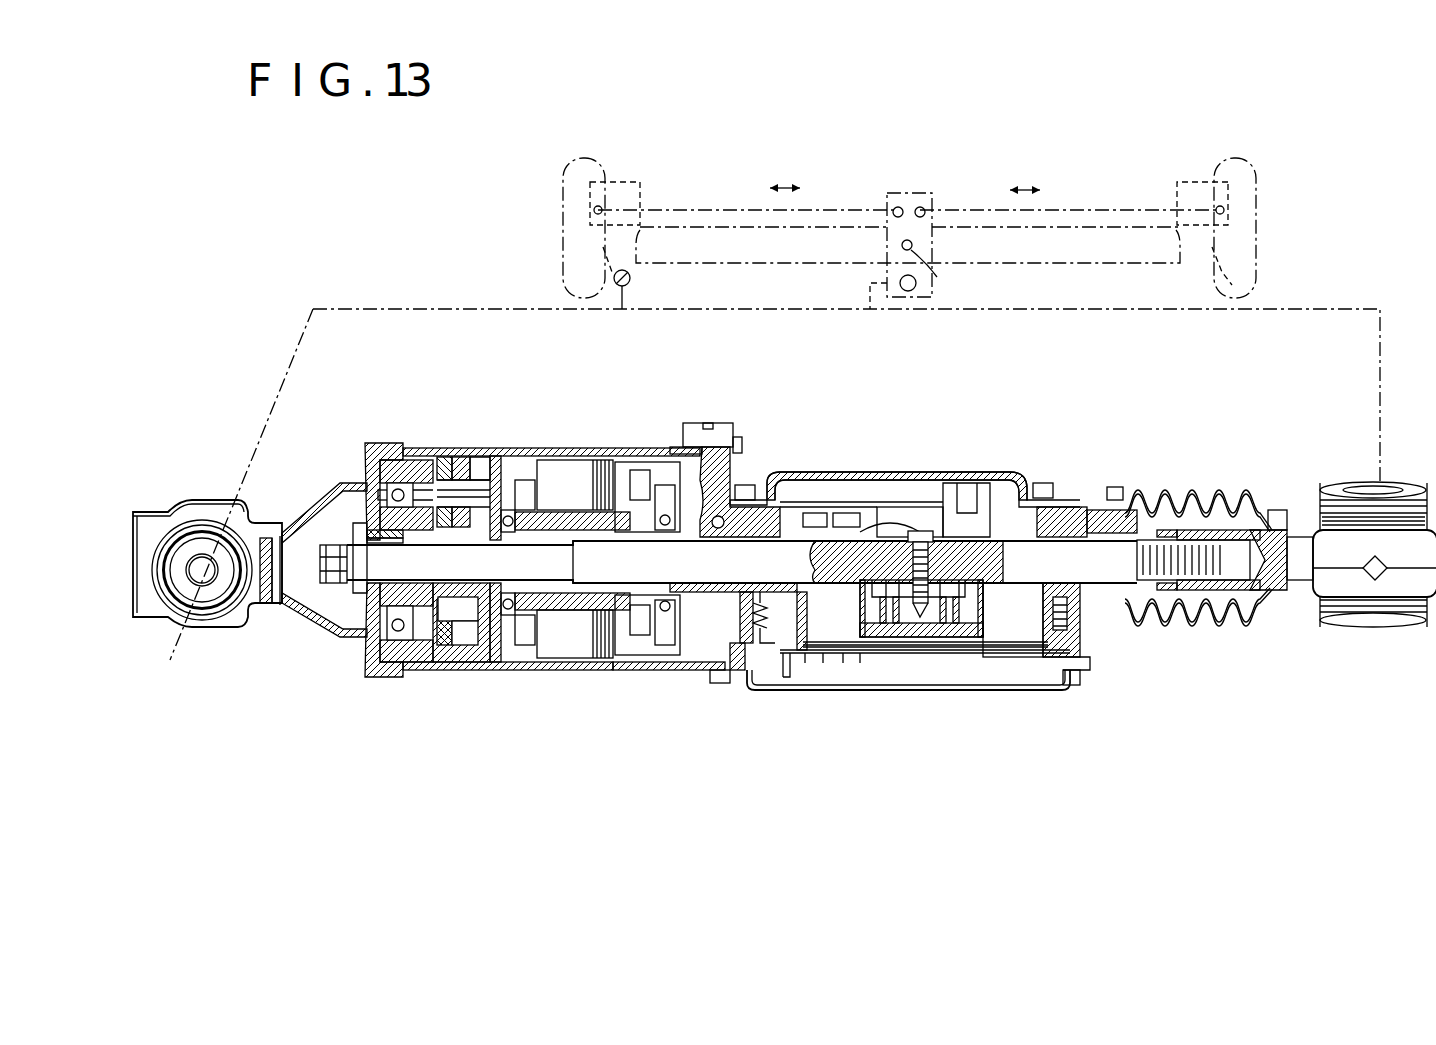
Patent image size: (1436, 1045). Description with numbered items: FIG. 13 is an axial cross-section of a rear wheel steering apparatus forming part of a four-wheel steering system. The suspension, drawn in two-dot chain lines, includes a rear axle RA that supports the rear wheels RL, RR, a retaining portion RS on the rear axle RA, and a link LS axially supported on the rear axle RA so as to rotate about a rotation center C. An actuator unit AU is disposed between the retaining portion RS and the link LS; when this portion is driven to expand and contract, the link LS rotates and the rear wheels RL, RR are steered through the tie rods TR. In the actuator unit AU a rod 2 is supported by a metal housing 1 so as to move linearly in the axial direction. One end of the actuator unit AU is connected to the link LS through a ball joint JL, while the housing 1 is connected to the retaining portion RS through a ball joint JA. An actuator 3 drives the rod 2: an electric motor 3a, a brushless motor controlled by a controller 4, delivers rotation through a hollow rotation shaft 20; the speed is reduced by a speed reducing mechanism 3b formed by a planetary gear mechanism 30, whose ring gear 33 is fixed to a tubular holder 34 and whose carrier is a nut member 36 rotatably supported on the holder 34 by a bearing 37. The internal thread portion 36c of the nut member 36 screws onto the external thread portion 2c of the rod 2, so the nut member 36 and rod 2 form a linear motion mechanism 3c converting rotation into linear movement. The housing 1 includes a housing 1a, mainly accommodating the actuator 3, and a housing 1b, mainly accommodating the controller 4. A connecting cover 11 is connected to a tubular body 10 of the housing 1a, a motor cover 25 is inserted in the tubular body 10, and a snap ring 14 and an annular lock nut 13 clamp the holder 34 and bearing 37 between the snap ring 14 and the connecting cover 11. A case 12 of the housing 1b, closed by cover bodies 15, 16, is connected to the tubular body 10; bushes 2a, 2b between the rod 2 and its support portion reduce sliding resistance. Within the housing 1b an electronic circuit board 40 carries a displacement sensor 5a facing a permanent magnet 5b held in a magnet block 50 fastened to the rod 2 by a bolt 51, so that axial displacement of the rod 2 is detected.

The housing 1 is at (713, 694).
The housing 1a is at (627, 680).
The housing 1b is at (848, 703).
The rod 2 is at (598, 573).
The bush 2a is at (790, 540).
The bush 2b is at (1075, 517).
The external thread portion 2c is at (360, 588).
The actuator 3 is at (417, 698).
The electric motor 3a is at (614, 437).
The speed reducing mechanism 3b is at (463, 428).
The linear motion mechanism 3c is at (357, 618).
The controller 4 is at (920, 680).
The displacement sensor 5a is at (920, 648).
The permanent magnet 5b is at (947, 642).
The tubular body 10 is at (563, 452).
The connecting cover 11 is at (303, 613).
The case 12 is at (730, 478).
The lock nut 13 is at (377, 450).
The snap ring 14 is at (493, 455).
The cover body 15 is at (967, 477).
The cover body 16 is at (1053, 690).
The hollow rotation shaft 20 is at (560, 613).
The motor cover 25 is at (508, 660).
The planetary gear mechanism 30 is at (467, 630).
The ring gear 33 is at (455, 468).
The holder 34 is at (448, 460).
The nut member 36 is at (378, 540).
The internal thread portion 36c is at (378, 548).
The bearing 37 is at (385, 495).
The electronic circuit board 40 is at (983, 655).
The magnet block 50 is at (995, 622).
The bolt 51 is at (920, 531).
The actuator unit AU is at (745, 409).
The ball joint JA is at (205, 628).
The ball joint JL is at (1368, 622).
The rear wheel RL is at (567, 232).
The rear wheel RR is at (1247, 244).
The tie rod TR is at (707, 208).
The rear axle RA is at (710, 265).
The retaining portion RS is at (630, 284).
The link LS is at (885, 283).
The rotation center C is at (923, 245).